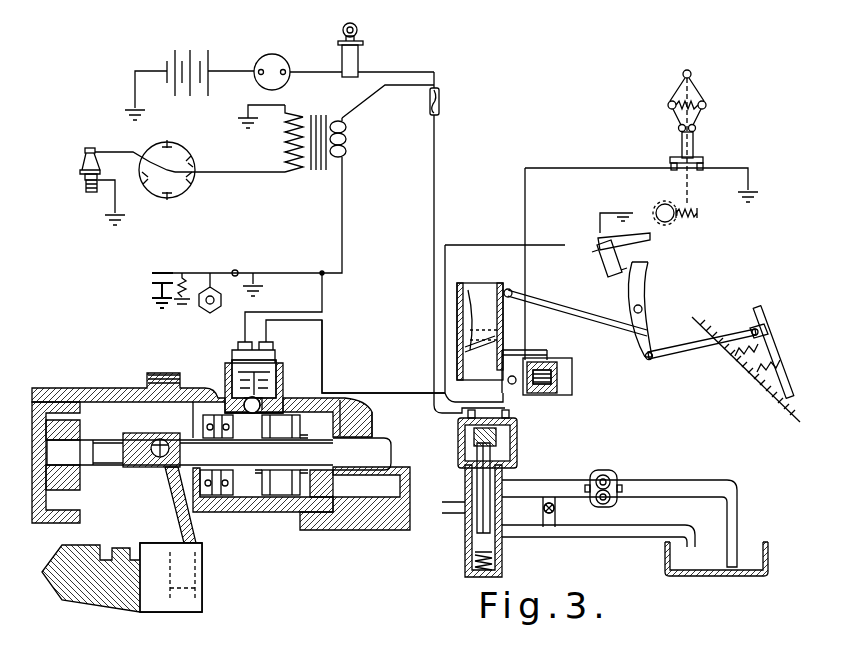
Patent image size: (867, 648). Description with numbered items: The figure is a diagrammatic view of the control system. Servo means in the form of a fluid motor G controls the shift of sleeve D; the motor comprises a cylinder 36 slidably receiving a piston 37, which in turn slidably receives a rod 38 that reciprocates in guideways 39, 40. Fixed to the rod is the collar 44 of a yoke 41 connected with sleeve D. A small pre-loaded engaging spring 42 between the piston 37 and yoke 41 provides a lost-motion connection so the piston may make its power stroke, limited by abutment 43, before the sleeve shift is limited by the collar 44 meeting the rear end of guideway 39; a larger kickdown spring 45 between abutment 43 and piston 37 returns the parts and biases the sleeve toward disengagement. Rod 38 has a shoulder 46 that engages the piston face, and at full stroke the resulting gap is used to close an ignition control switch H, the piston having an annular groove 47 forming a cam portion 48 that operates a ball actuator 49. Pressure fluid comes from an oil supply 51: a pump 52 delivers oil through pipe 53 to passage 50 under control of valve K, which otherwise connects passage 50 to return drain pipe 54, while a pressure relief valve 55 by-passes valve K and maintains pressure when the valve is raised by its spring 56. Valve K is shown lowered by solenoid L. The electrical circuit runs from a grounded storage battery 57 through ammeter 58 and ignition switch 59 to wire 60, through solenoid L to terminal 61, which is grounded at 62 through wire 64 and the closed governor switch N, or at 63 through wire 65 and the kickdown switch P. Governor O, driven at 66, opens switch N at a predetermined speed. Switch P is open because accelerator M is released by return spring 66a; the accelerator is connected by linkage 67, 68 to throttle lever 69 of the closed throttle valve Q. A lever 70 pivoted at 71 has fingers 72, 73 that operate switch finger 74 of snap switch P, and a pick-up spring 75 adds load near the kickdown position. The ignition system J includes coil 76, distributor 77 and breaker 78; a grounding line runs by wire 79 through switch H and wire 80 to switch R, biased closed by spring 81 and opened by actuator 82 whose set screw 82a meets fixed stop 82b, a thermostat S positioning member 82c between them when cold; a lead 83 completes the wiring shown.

The storage battery 57 is at (207, 62).
The ammeter 58 is at (284, 58).
The ignition switch 59 is at (362, 55).
The wire 60 is at (434, 72).
The terminal 61 is at (525, 247).
The ground 62 is at (750, 200).
The ground 63 is at (633, 208).
The wire 64 is at (607, 168).
The wire 65 is at (563, 245).
The governor drive 66 is at (672, 222).
The return spring 66a is at (768, 392).
The linkage 67 is at (712, 340).
The linkage 68 is at (613, 327).
The throttle lever 69 is at (508, 289).
The lever 70 is at (645, 312).
The pivot 71 is at (650, 300).
The finger 72 is at (634, 280).
The finger 73 is at (610, 292).
The switch finger 74 is at (605, 272).
The pick-up spring 75 is at (722, 360).
The coil 76 is at (322, 115).
The distributor 77 is at (177, 197).
The breaker 78 is at (183, 270).
The wire 79 is at (325, 297).
The wire 80 is at (400, 393).
The spring 81 is at (550, 393).
The switch actuator 82 is at (545, 360).
The set screw 82a is at (508, 348).
The fixed stop 82b is at (528, 358).
The operated member 82c is at (505, 347).
The conductor 83 is at (459, 387).
The cylinder 36 is at (268, 492).
The piston 37 is at (362, 408).
The rod 38 is at (252, 448).
The guideway 39 is at (96, 428).
The guideway 40 is at (372, 437).
The yoke 41 is at (170, 505).
The engaging spring 42 is at (278, 473).
The abutment 43 is at (247, 497).
The collar 44 is at (146, 432).
The kickdown spring 45 is at (323, 477).
The shoulder 46 is at (355, 498).
The annular groove 47 is at (276, 412).
The cam portion 48 is at (260, 428).
The ball actuator 49 is at (255, 428).
The passage 50 is at (385, 500).
The oil supply 51 is at (773, 543).
The pump 52 is at (620, 475).
The pipe 53 is at (547, 482).
The return drain pipe 54 is at (635, 532).
The pressure relief valve 55 is at (556, 512).
The spring 56 is at (465, 575).
The sleeve D is at (205, 560).
The fluid motor G is at (215, 400).
The ignition control switch H is at (278, 360).
The ignition system J is at (275, 176).
The valve K is at (502, 478).
The solenoid L is at (517, 433).
The accelerator M is at (771, 315).
The governor switch N is at (703, 160).
The governor O is at (700, 93).
The kickdown switch P is at (585, 258).
The throttle valve Q is at (478, 300).
The switch R is at (572, 378).
The thermostat S is at (505, 383).